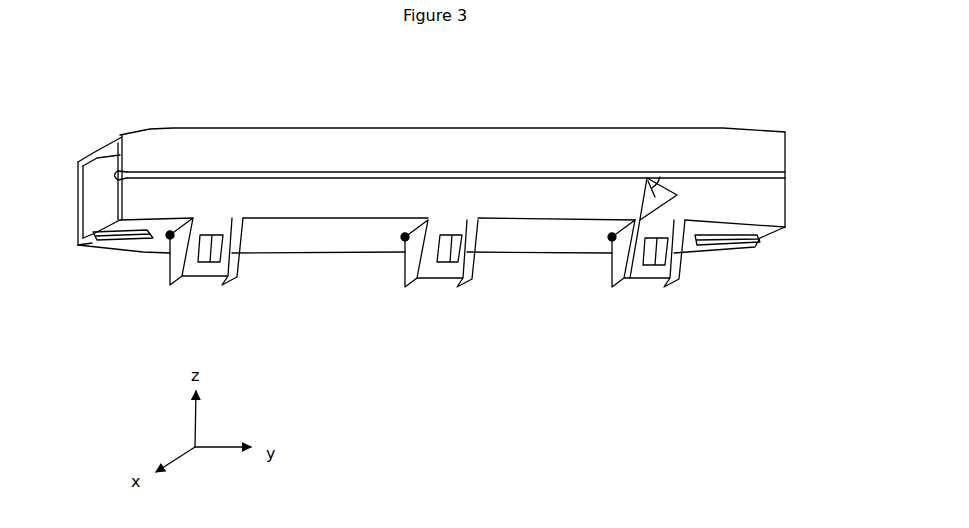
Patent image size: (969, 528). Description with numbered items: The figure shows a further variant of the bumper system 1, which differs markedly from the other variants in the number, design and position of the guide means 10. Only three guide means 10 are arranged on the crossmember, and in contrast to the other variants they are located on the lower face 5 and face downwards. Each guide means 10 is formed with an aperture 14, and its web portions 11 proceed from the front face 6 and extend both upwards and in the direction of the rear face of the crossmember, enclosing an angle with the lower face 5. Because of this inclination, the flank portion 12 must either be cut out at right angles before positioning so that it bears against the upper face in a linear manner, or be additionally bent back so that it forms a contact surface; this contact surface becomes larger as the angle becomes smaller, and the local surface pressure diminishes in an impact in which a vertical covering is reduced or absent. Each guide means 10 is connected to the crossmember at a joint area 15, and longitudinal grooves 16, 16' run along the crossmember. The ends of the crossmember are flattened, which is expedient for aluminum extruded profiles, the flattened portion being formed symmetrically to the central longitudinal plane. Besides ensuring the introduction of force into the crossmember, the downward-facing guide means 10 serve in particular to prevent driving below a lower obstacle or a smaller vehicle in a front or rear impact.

The bumper system 1 is at (728, 313).
The lower face 5 is at (88, 155).
The front face 6 is at (342, 140).
The guide means 10 is at (397, 278).
The web portions 11 is at (460, 275).
The flank portion 12 is at (175, 258).
The aperture 14 is at (207, 257).
The joint area 15 is at (405, 237).
The longitudinal groove 16 is at (450, 133).
The longitudinal groove 16' is at (101, 269).